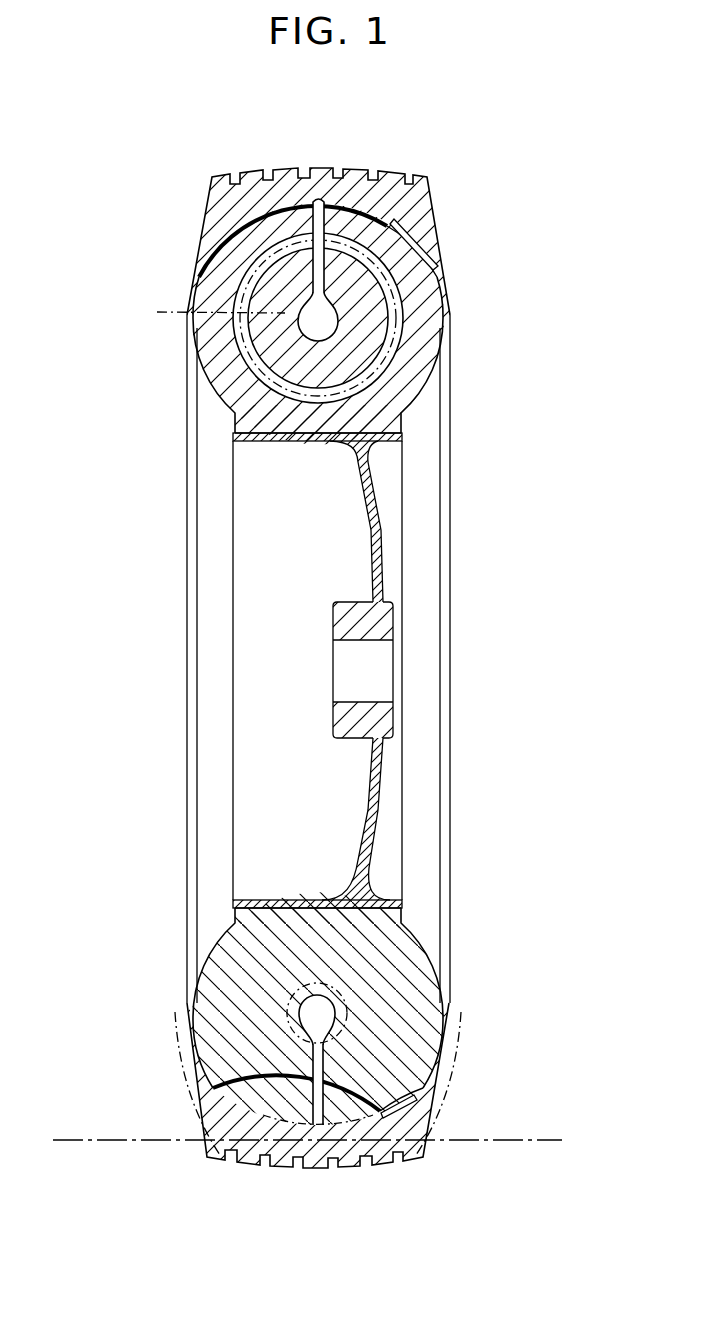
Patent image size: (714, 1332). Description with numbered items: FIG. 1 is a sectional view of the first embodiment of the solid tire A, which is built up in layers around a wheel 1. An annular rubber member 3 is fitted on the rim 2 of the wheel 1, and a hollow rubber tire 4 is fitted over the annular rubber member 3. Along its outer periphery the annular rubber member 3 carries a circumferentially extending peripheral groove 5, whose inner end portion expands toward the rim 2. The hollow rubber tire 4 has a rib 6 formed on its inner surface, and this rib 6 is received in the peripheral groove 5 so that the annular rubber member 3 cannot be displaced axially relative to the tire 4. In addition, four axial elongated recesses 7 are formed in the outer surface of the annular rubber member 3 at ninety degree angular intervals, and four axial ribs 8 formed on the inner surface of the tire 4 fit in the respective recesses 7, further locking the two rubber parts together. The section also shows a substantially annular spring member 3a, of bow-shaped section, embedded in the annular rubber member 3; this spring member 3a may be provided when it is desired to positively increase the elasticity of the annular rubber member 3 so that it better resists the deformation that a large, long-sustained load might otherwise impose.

The wheel 1 is at (378, 567).
The rim 2 is at (348, 403).
The annular rubber member 3 is at (237, 360).
The annular spring member 3a is at (201, 314).
The hollow rubber tire 4 is at (378, 178).
The peripheral groove 5 is at (328, 314).
The rib 6 is at (322, 200).
The axial elongated recesses 7 is at (388, 198).
The axial ribs 8 is at (267, 217).
The solid tire A is at (193, 274).